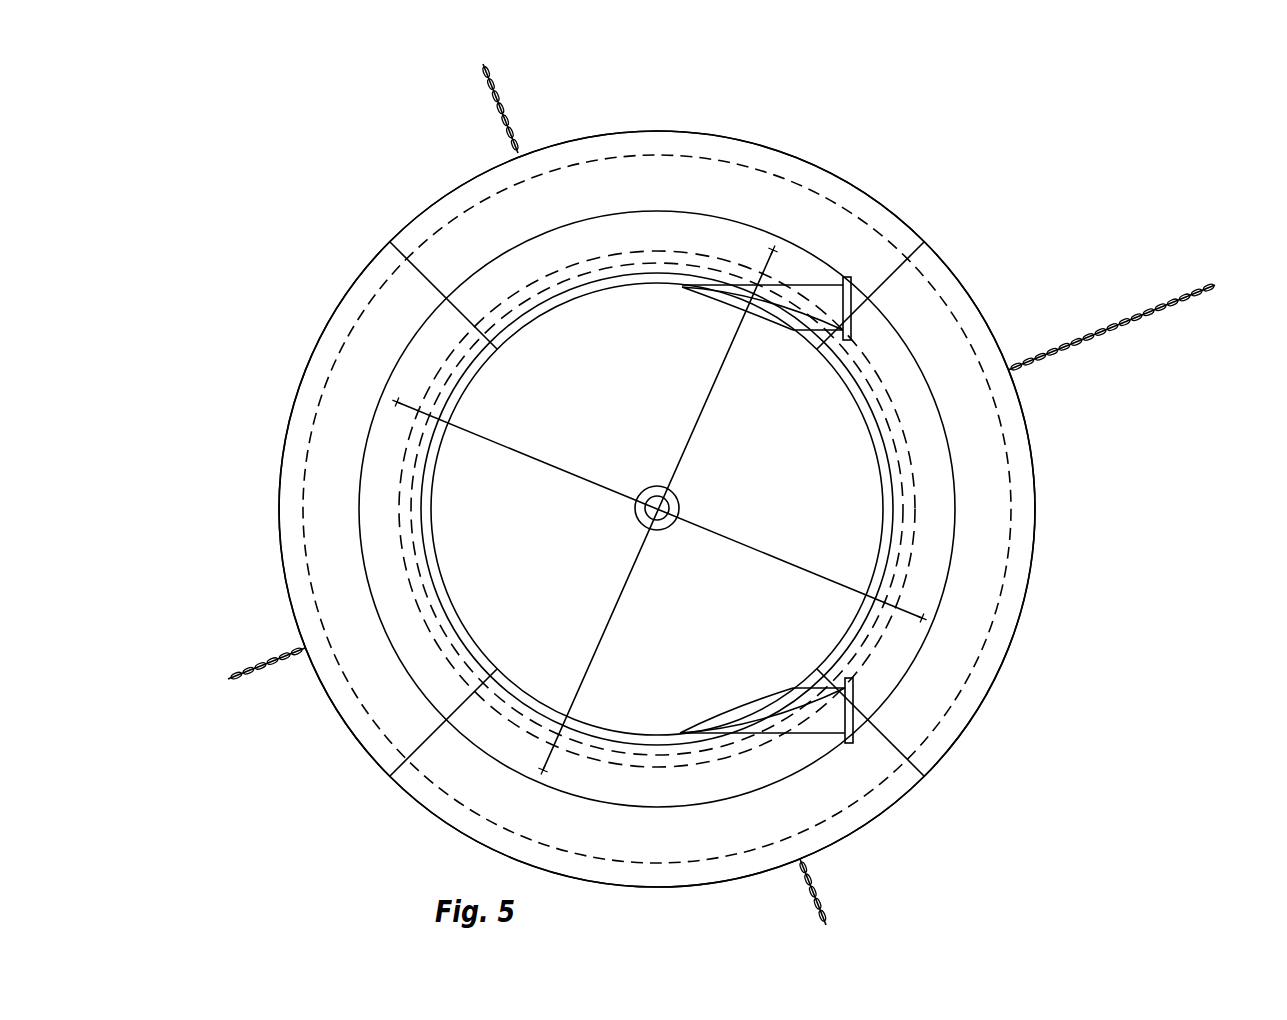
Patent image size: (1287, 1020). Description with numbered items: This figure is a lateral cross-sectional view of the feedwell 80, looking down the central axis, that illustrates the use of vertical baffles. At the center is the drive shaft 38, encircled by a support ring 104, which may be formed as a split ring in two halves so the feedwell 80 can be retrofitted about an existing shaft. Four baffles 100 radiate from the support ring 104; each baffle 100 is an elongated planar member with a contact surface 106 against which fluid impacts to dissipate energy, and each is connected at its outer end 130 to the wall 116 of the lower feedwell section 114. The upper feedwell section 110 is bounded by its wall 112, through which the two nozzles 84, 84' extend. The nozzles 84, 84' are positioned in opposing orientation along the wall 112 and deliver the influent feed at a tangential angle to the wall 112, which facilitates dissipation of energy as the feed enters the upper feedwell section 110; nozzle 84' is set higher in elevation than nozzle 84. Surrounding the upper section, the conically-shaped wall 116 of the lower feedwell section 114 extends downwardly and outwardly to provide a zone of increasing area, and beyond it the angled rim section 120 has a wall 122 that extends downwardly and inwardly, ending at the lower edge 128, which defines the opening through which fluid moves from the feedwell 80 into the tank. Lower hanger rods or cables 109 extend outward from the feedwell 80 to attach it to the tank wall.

The drive shaft 38 is at (675, 494).
The feedwell 80 is at (313, 305).
The nozzle 84 is at (766, 743).
The nozzle 84' is at (803, 254).
The baffle 100 is at (520, 452).
The support ring 104 is at (672, 525).
The contact surface 106 is at (465, 425).
The lower hanger rods or cables 109 is at (497, 108).
The upper feedwell section 110 is at (458, 656).
The wall 112 is at (455, 590).
The lower feedwell section 114 is at (683, 238).
The wall 116 is at (333, 473).
The angled rim section 120 is at (1002, 672).
The wall 122 is at (1012, 597).
The lower edge 128 is at (1022, 437).
The end 130 is at (922, 618).